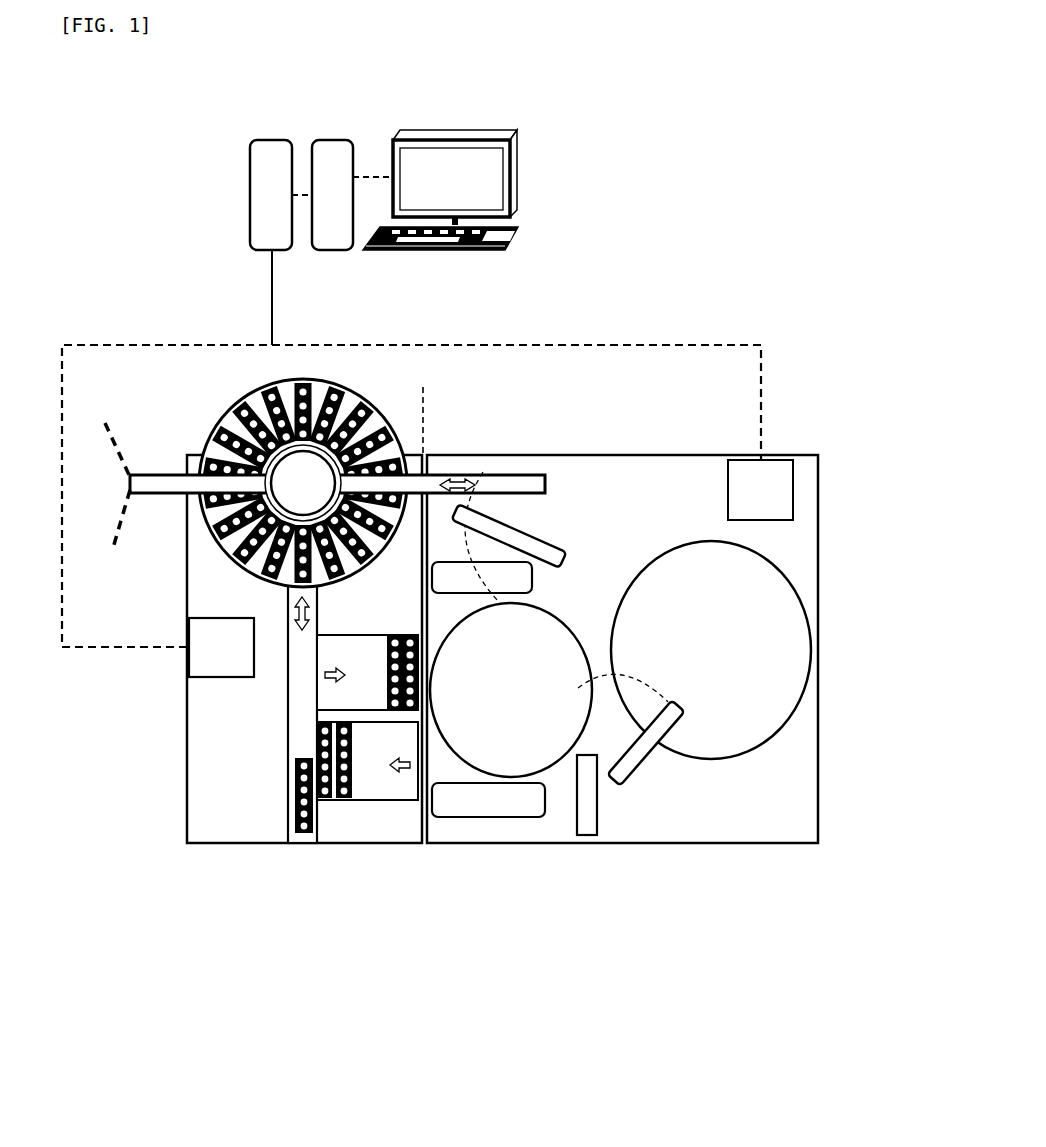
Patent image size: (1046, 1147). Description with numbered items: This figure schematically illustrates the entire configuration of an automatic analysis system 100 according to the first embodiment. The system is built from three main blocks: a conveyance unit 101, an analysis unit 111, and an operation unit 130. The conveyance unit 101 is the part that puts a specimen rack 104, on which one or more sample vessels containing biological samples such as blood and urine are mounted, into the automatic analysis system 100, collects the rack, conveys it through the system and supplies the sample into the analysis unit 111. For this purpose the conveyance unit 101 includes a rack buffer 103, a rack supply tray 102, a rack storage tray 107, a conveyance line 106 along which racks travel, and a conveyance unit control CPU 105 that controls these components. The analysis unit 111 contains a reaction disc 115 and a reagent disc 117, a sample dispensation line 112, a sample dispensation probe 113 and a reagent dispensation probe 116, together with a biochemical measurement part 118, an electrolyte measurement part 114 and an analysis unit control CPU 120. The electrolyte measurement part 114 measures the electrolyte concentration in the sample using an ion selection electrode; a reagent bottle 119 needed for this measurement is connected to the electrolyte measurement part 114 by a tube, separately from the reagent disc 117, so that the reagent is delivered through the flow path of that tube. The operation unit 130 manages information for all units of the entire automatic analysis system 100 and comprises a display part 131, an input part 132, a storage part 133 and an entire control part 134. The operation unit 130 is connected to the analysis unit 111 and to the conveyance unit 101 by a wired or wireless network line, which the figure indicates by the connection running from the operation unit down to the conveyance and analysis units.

The automatic analysis system 100 is at (526, 662).
The conveyance unit 101 is at (178, 465).
The rack supply tray 102 is at (316, 735).
The rack buffer 103 is at (229, 408).
The specimen rack 104 is at (340, 802).
The conveyance unit control CPU 105 is at (186, 632).
The conveyance line 106 is at (284, 770).
The rack storage tray 107 is at (316, 683).
The analysis unit 111 is at (822, 546).
The sample dispensation line 112 is at (480, 475).
The sample dispensation probe 113 is at (552, 545).
The electrolyte measurement part 114 is at (534, 575).
The reaction disc 115 is at (558, 758).
The reagent dispensation probe 116 is at (718, 766).
The reagent disc 117 is at (698, 538).
The biochemical measurement part 118 is at (484, 818).
The reagent bottle 119 is at (595, 820).
The analysis unit control CPU 120 is at (777, 460).
The operation unit 130 is at (422, 194).
The display part 131 is at (520, 160).
The input part 132 is at (520, 240).
The storage part 133 is at (320, 254).
The entire control part 134 is at (253, 252).